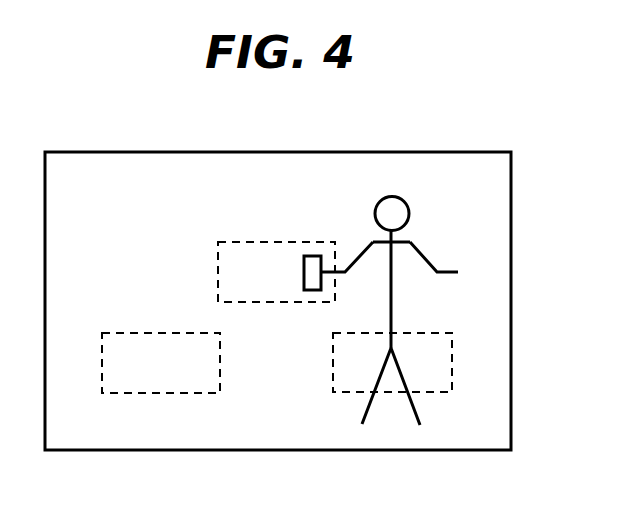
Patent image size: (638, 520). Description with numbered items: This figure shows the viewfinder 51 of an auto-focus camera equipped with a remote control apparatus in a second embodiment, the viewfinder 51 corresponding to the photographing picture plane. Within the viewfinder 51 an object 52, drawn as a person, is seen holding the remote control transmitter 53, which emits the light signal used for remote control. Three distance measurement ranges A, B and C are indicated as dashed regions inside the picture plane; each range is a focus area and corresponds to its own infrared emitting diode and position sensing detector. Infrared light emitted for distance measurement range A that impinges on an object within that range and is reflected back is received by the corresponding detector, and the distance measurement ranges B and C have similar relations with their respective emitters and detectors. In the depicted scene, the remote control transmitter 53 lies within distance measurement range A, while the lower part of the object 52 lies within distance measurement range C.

The viewfinder 51 is at (483, 151).
The object 52 is at (408, 205).
The remote control transmitter 53 is at (313, 290).
The distance measurement range A is at (263, 242).
The distance measurement range B is at (148, 333).
The distance measurement range C is at (430, 333).